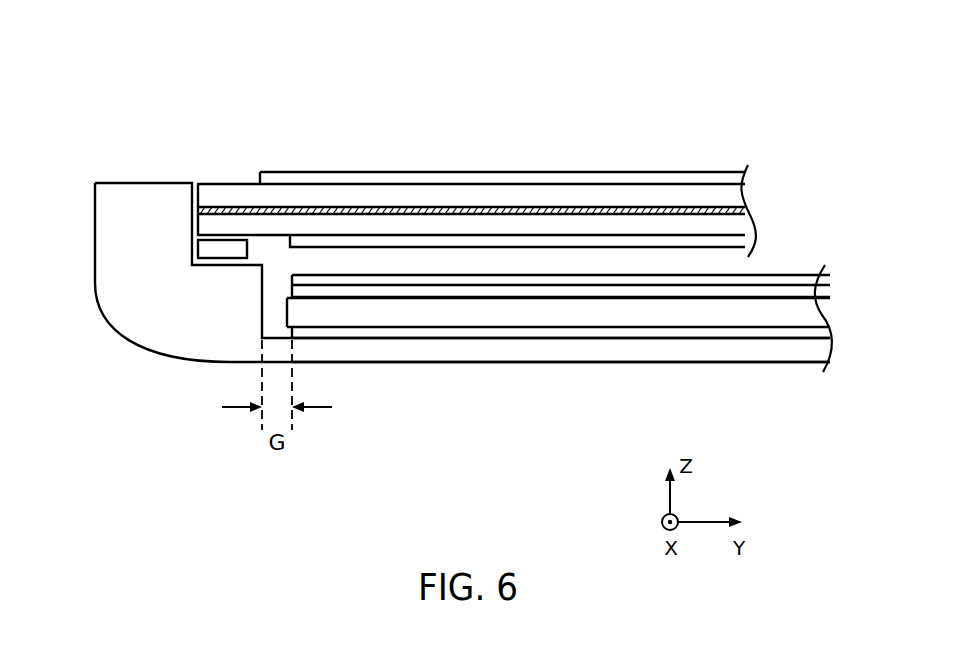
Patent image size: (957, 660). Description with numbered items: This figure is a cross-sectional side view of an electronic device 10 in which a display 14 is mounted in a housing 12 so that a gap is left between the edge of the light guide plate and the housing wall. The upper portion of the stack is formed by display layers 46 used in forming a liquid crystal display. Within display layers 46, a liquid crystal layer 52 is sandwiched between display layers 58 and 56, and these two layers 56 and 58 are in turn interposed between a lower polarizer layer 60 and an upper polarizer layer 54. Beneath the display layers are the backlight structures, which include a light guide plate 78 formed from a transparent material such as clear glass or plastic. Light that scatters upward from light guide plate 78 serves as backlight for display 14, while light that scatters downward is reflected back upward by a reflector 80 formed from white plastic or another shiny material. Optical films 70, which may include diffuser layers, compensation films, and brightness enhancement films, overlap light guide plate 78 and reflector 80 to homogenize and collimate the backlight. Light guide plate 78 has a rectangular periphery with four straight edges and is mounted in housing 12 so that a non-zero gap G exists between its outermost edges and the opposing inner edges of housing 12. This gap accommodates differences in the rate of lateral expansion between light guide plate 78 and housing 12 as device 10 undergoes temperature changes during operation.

The device 10 is at (115, 33).
The housing 12 is at (140, 343).
The display 14 is at (722, 71).
The display layers 46 is at (511, 188).
The liquid crystal layer 52 is at (215, 210).
The upper polarizer layer 54 is at (705, 175).
The display layer 56 is at (628, 188).
The display layer 58 is at (540, 220).
The lower polarizer layer 60 is at (452, 238).
The optical films 70 is at (830, 272).
The light guide plate 78 is at (813, 310).
The reflector 80 is at (823, 332).